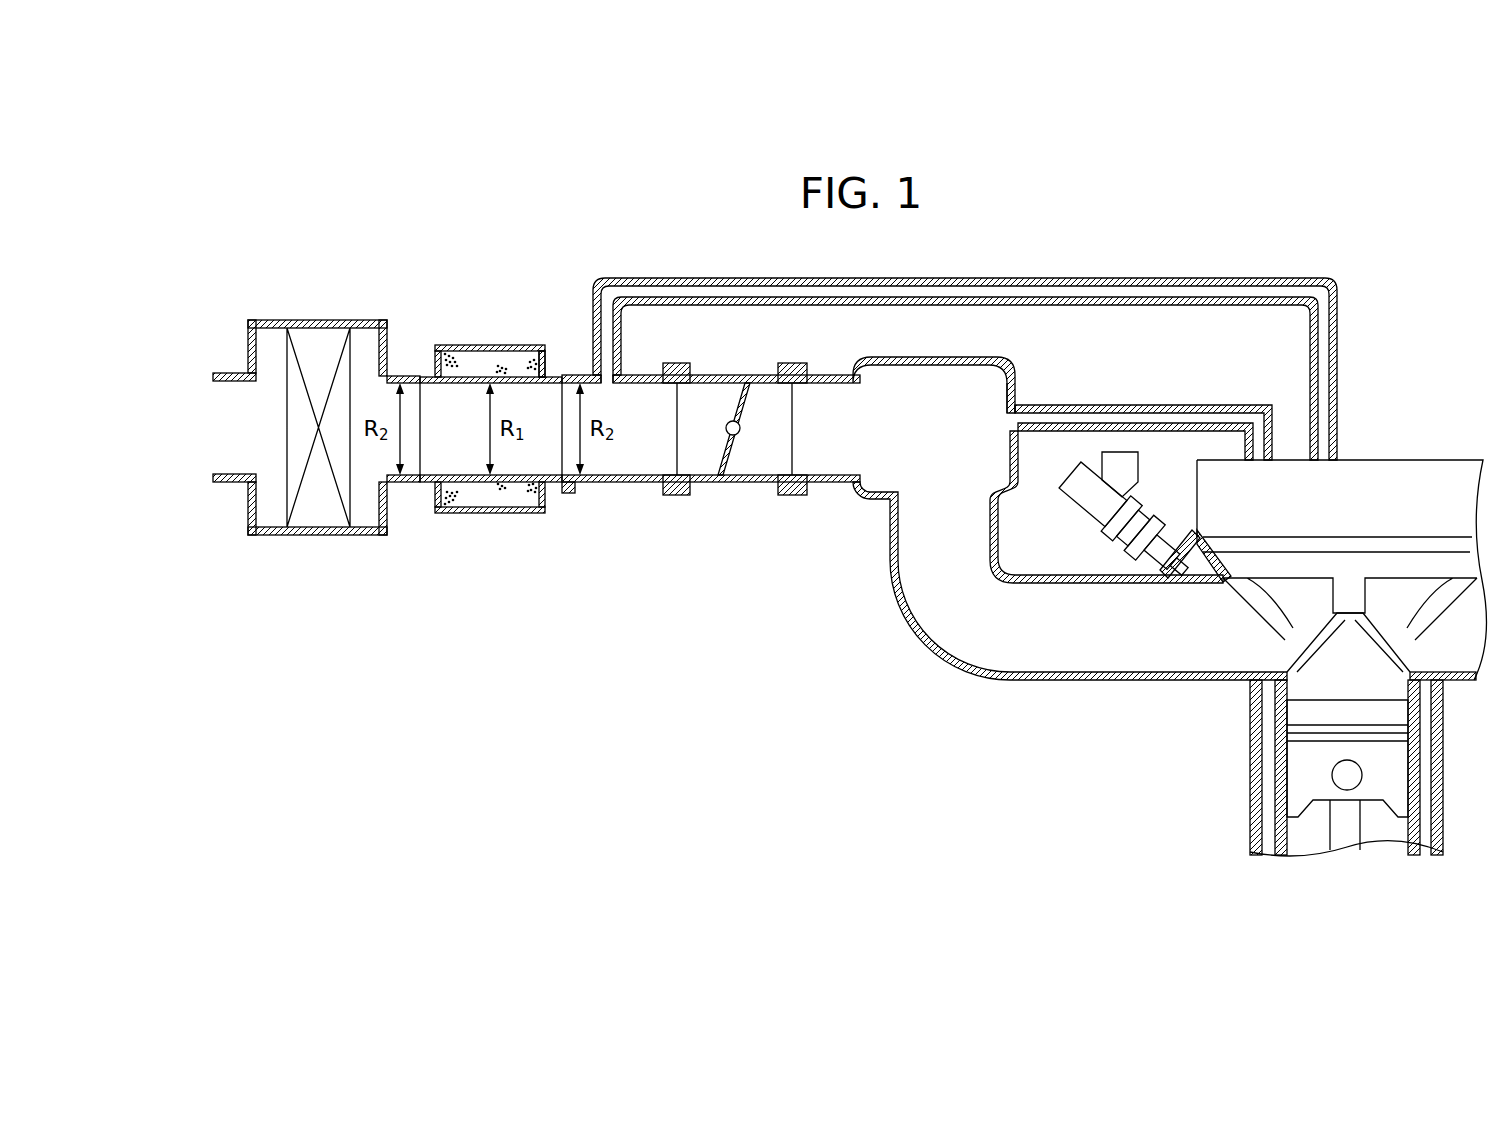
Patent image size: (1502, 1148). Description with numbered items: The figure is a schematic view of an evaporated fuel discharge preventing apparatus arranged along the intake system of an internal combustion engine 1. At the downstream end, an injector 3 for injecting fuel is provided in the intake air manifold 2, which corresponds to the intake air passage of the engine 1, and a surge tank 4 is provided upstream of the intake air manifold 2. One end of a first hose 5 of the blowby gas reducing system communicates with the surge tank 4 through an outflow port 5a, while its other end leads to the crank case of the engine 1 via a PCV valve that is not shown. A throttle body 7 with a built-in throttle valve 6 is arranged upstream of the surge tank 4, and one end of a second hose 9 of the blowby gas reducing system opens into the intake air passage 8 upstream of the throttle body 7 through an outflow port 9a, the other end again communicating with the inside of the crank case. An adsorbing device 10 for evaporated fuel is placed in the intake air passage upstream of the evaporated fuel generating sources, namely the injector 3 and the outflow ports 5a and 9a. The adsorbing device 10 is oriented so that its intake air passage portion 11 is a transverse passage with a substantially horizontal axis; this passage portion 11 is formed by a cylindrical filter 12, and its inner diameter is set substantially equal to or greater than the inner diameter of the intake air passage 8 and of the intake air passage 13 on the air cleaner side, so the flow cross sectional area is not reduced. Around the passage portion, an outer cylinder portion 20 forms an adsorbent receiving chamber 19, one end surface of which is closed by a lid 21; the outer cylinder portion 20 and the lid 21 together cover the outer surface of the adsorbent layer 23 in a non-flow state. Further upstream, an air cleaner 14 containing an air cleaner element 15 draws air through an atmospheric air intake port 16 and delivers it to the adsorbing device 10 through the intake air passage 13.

The internal combustion engine 1 is at (1296, 768).
The intake air manifold 2 is at (1076, 665).
The injector 3 is at (1140, 553).
The surge tank 4 is at (875, 488).
The first hose 5 is at (1167, 403).
The outflow port 5a is at (1020, 417).
The throttle valve 6 is at (727, 457).
The throttle body 7 is at (710, 477).
The intake air passage 8 is at (643, 470).
The second hose 9 is at (1022, 287).
The outflow port 9a is at (612, 372).
The adsorbing device 10 is at (504, 448).
The intake air passage portion 11 is at (540, 462).
The cylindrical filter 12 is at (492, 485).
The intake air passage 13 is at (384, 462).
The air cleaner 14 is at (320, 318).
The air cleaner element 15 is at (317, 518).
The atmospheric air intake port 16 is at (230, 432).
The adsorbent receiving chamber 19 is at (492, 363).
The outer cylinder portion 20 is at (530, 517).
The lid 21 is at (547, 350).
The adsorbent layer 23 is at (462, 345).